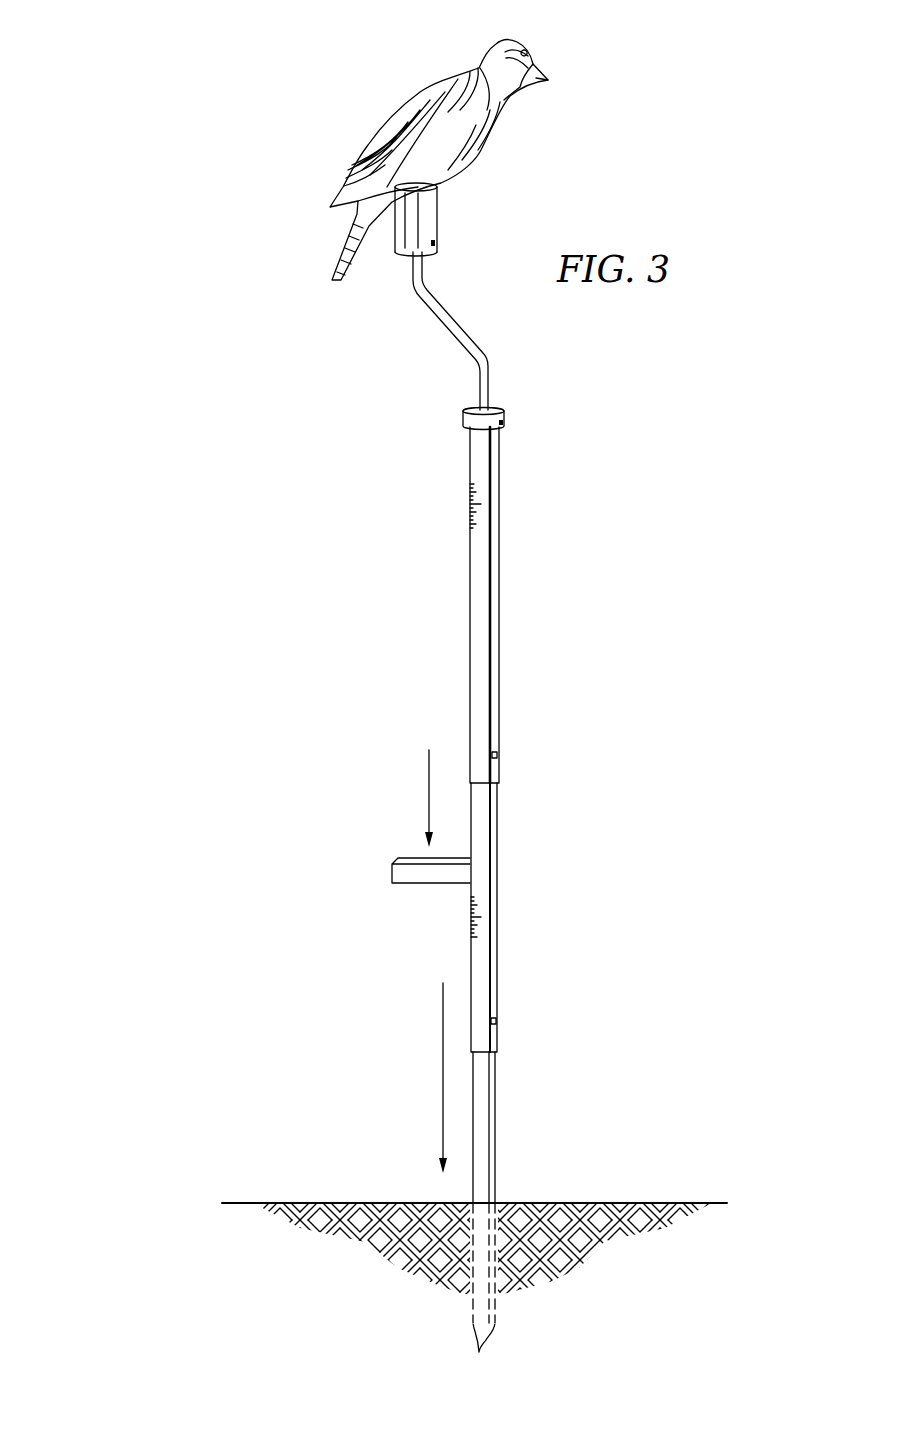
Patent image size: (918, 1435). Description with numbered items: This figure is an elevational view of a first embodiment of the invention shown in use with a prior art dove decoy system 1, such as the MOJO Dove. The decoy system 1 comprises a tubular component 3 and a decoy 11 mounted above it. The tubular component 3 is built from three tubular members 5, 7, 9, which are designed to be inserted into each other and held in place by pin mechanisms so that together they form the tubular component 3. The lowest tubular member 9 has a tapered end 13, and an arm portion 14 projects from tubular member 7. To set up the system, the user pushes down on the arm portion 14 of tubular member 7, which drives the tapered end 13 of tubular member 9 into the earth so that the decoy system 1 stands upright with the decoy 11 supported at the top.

The dove decoy system 1 is at (152, 200).
The tubular component 3 is at (462, 596).
The tubular member 5 is at (499, 530).
The tubular member 7 is at (497, 950).
The tubular member 9 is at (495, 1120).
The decoy 11 is at (441, 81).
The tapered end 13 is at (485, 1340).
The arm portion 14 is at (415, 883).